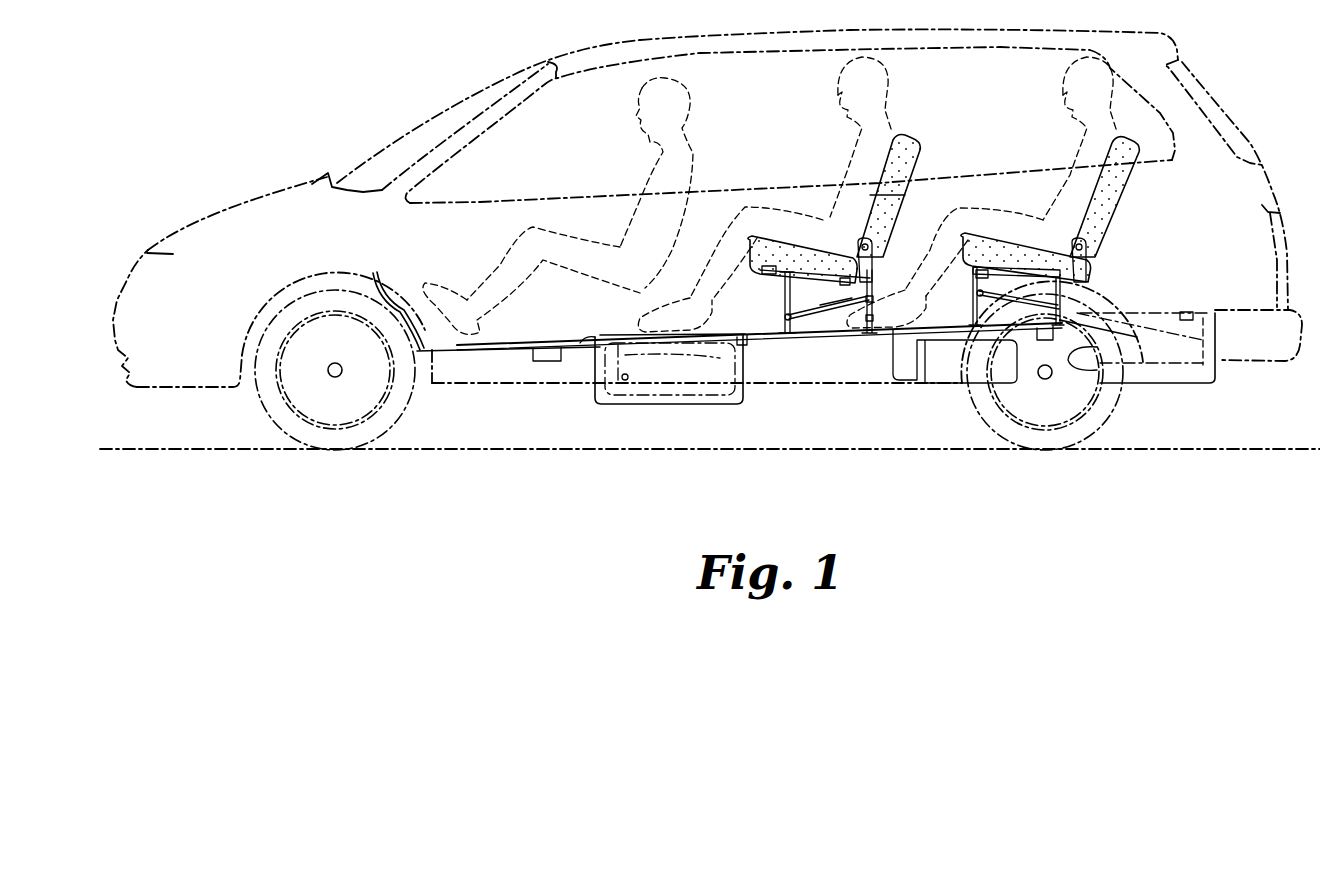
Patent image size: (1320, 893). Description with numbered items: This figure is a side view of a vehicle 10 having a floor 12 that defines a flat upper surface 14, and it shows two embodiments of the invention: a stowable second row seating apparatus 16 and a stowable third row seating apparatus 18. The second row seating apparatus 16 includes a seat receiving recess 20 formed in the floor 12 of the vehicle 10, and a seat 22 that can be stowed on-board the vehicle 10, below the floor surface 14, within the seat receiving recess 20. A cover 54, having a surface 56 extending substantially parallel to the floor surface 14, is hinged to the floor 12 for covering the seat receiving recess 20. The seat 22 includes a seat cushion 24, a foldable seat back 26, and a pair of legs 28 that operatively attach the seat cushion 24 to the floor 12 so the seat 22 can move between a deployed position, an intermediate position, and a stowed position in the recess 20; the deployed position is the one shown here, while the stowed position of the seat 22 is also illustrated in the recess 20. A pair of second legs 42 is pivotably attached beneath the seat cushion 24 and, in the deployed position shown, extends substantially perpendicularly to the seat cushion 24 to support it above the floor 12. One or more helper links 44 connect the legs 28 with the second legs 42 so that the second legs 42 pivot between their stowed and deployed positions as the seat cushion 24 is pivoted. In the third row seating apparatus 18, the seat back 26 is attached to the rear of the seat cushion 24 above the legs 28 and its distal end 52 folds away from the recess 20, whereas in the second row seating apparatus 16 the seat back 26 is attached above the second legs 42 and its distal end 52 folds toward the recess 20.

The vehicle 10 is at (1197, 55).
The floor 12 is at (948, 321).
The flat upper surface of the floor 14 is at (957, 318).
The stowable second row seating apparatus 16 is at (874, 236).
The stowable third row seating apparatus 18 is at (1068, 266).
The seat receiving recess 20 is at (597, 343).
The seat 22 is at (874, 236).
The seat cushion 24 is at (748, 242).
The foldable seat back 26 is at (893, 188).
The legs 28 is at (785, 280).
The second legs 42 is at (857, 320).
The helper links 44 is at (822, 315).
The distal end of the seat back 52 is at (910, 138).
The cover 54 is at (617, 335).
The surface of the cover 56 is at (594, 374).